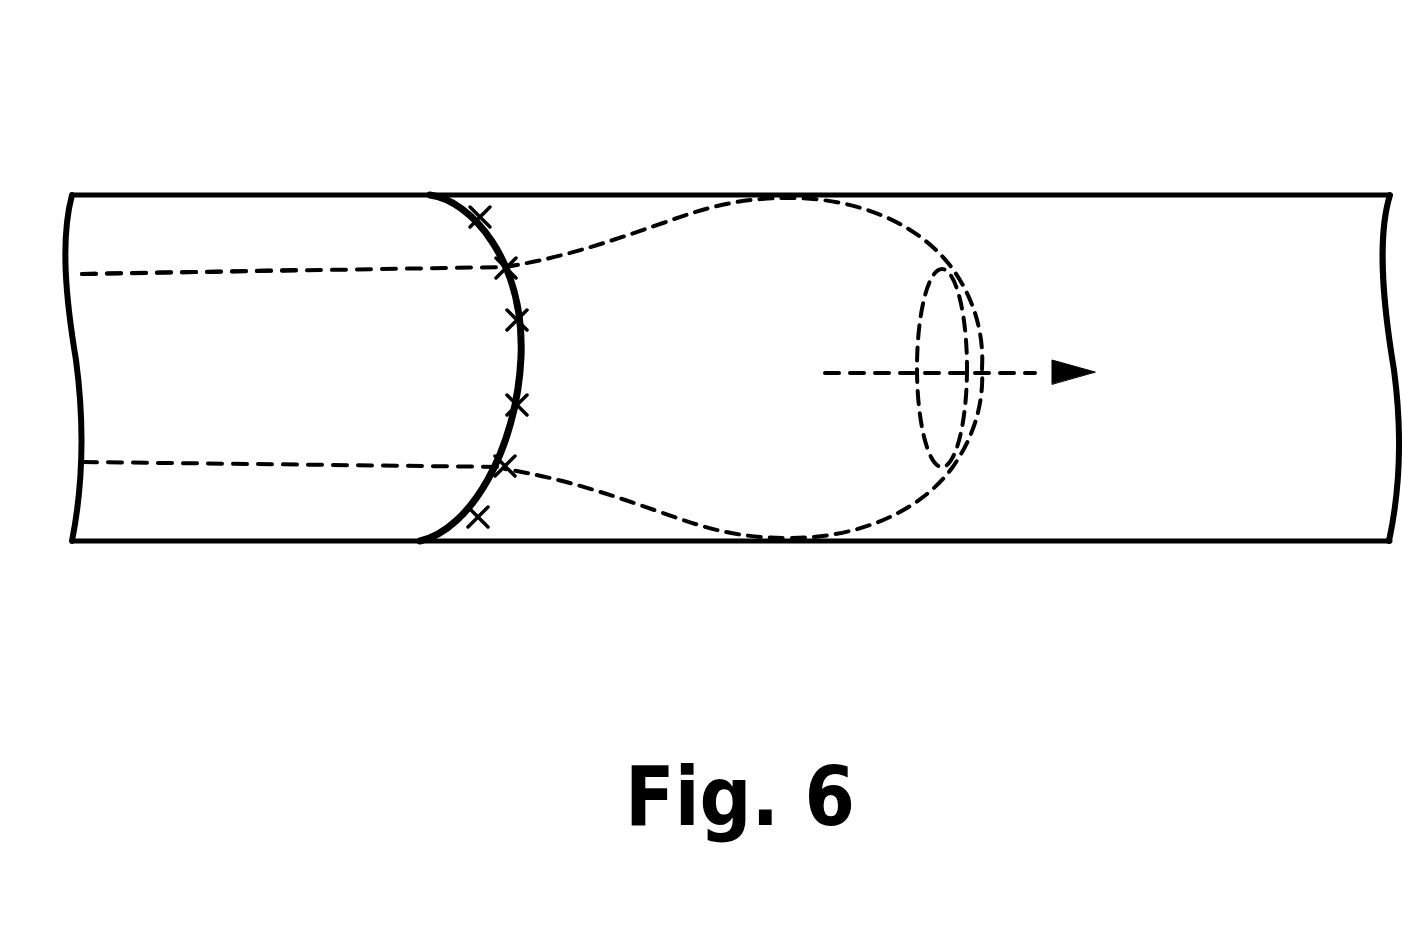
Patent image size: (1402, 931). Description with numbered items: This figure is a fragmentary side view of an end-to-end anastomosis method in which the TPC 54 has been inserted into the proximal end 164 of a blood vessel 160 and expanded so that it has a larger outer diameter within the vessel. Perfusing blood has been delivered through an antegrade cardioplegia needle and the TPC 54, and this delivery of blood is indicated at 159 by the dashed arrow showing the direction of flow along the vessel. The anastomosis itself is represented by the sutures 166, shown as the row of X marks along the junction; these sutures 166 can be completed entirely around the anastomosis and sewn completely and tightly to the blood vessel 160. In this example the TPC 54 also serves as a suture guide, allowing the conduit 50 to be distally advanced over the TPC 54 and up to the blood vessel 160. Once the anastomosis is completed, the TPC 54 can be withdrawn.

The conduit 50 is at (197, 542).
The TPC 54 is at (197, 273).
The perfusing blood delivery 159 is at (1030, 372).
The blood vessel 160 is at (1103, 195).
The proximal end 164 is at (527, 542).
The sutures 166 is at (482, 217).